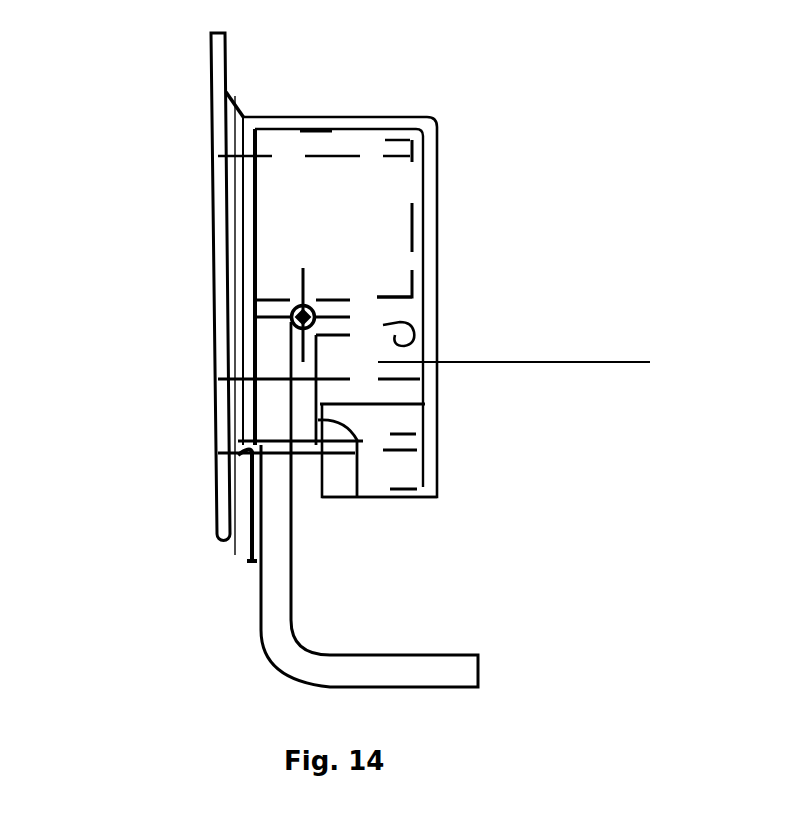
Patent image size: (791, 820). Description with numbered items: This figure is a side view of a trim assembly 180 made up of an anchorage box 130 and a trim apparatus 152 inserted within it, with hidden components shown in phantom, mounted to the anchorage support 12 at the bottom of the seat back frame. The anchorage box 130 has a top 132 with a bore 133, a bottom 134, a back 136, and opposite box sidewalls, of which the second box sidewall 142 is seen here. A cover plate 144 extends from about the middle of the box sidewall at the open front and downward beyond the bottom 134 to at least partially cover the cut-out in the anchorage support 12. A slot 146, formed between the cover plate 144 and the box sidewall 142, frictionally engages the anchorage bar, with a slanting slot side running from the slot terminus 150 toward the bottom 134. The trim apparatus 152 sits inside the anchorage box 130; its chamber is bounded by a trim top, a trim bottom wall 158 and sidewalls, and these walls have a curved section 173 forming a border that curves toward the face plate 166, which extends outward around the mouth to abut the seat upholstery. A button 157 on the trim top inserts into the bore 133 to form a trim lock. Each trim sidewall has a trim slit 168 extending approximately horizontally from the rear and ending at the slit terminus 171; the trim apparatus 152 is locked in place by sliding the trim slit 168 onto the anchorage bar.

The anchorage support 12 is at (437, 653).
The anchorage box 130 is at (442, 430).
The top 132 is at (372, 117).
The bore 133 is at (317, 118).
The bottom 134 is at (420, 500).
The back 136 is at (438, 247).
The second box sidewall 142 is at (378, 222).
The cover plate 144 is at (247, 548).
The slot 146 is at (360, 503).
The slot terminus 150 is at (300, 305).
The trim apparatus 152 is at (212, 240).
The button 157 is at (357, 140).
The trim bottom wall 158 is at (301, 458).
The face plate 166 is at (210, 67).
The trim slit 168 is at (420, 340).
The slit terminus 171 is at (310, 301).
The curved section 173 is at (233, 117).
The trim assembly 180 is at (395, 362).